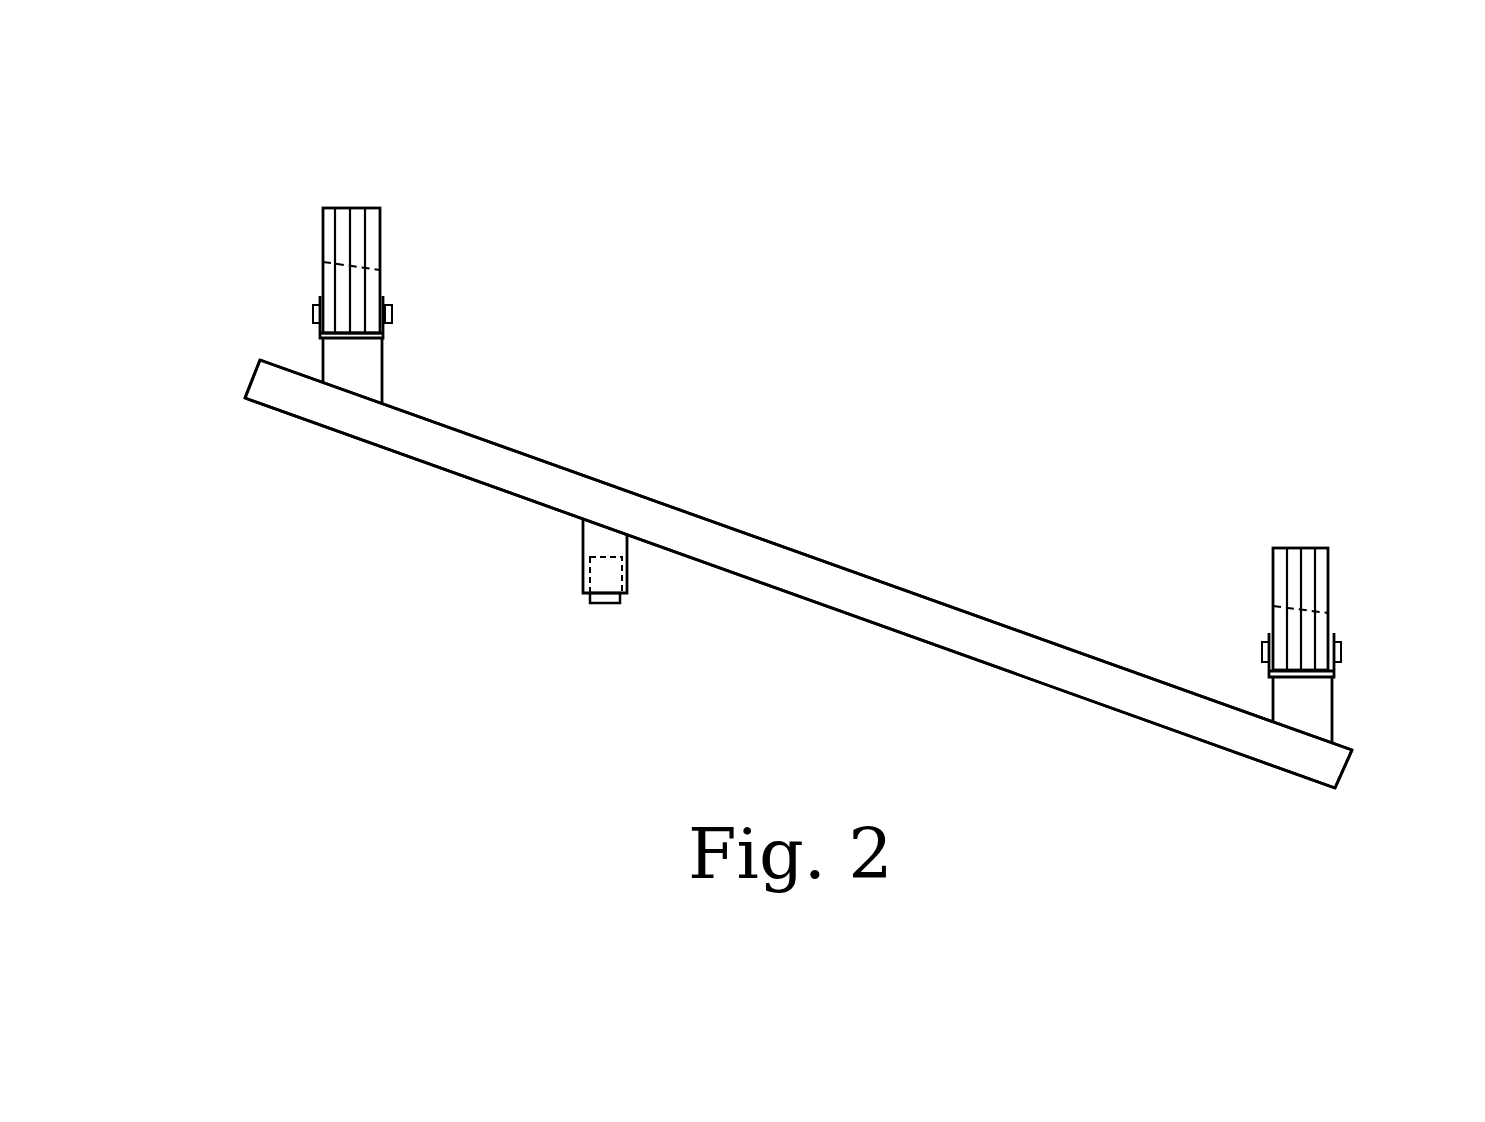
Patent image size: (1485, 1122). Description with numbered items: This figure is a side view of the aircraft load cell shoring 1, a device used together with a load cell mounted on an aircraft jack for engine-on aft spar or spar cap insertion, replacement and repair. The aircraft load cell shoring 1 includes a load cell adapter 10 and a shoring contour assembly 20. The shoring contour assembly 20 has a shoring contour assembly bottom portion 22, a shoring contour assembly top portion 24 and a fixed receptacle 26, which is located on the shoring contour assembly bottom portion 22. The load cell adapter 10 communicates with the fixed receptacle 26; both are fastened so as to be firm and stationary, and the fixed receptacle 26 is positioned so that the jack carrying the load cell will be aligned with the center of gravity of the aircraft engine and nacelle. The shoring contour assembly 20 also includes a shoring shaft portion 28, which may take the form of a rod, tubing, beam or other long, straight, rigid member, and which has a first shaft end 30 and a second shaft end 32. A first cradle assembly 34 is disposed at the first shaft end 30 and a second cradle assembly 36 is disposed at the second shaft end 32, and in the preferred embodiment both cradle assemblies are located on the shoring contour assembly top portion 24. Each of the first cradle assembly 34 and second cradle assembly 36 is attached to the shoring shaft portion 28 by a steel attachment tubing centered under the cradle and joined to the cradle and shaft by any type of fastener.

The aircraft load cell shoring 1 is at (785, 240).
The load cell adapter 10 is at (620, 603).
The shoring contour assembly 20 is at (643, 490).
The shoring contour assembly bottom portion 22 is at (788, 592).
The shoring contour assembly top portion 24 is at (722, 522).
The fixed receptacle 26 is at (580, 547).
The shoring shaft portion 28 is at (508, 465).
The first shaft end 30 is at (249, 377).
The second shaft end 32 is at (1347, 775).
The first cradle assembly 34 is at (322, 278).
The second cradle assembly 36 is at (1273, 622).